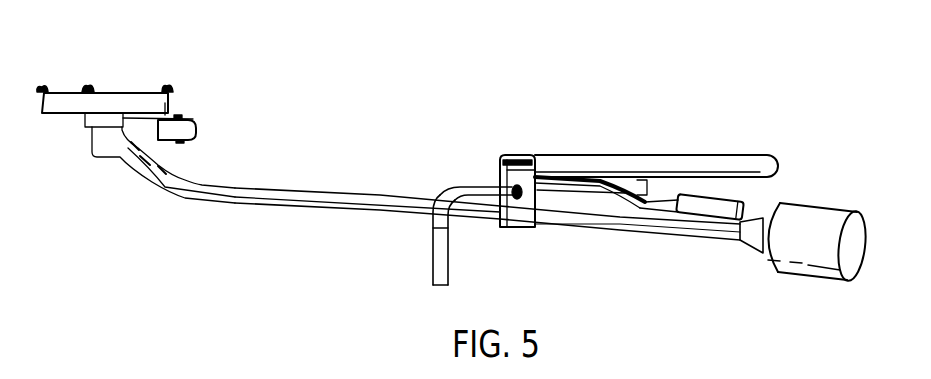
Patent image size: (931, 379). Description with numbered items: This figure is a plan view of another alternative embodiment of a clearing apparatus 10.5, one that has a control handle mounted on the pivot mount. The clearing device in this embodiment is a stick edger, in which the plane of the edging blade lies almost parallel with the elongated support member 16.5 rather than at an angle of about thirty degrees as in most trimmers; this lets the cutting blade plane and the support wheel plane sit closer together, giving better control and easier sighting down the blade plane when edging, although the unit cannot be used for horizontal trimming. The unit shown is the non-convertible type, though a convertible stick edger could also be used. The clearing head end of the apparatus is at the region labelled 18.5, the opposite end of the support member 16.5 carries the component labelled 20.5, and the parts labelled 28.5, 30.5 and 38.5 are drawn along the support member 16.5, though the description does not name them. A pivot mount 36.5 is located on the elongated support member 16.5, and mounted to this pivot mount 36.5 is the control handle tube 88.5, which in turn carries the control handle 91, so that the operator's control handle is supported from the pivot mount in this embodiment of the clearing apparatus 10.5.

The clearing apparatus 10.5 is at (422, 103).
The elongated support member 16.5 is at (362, 202).
The mounting head assembly 18.5 is at (208, 155).
The knob 20.5 is at (810, 245).
The tube connector 28.5 is at (470, 187).
The bar 30.5 is at (698, 167).
The pivot mount 36.5 is at (527, 227).
The tube 38.5 is at (440, 267).
The control handle tube 88.5 is at (540, 162).
The control handle 91 is at (730, 200).